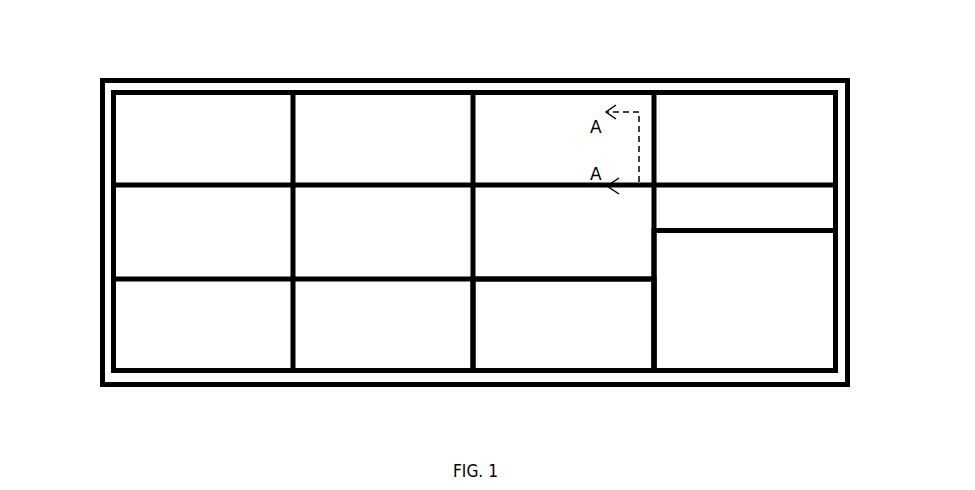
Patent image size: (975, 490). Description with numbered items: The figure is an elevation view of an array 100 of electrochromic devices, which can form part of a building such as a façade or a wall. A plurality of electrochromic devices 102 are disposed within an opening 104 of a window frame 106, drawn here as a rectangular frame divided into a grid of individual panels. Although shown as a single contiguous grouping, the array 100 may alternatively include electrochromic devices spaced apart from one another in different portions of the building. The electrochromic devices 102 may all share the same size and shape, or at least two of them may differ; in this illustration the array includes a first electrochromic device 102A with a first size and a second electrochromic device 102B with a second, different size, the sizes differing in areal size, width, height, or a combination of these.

The array of electrochromic devices 100 is at (866, 114).
The electrochromic devices 102 is at (137, 312).
The first electrochromic device 102A is at (632, 335).
The second electrochromic device 102B is at (813, 323).
The opening 104 is at (242, 92).
The window frame 106 is at (185, 378).